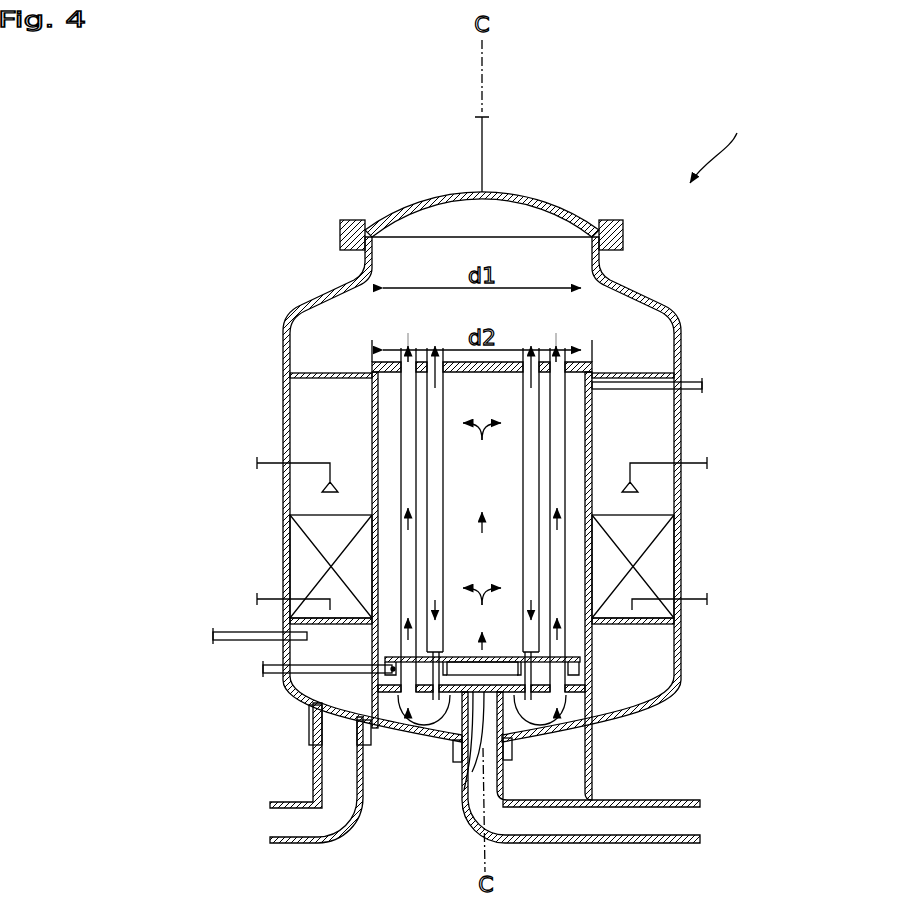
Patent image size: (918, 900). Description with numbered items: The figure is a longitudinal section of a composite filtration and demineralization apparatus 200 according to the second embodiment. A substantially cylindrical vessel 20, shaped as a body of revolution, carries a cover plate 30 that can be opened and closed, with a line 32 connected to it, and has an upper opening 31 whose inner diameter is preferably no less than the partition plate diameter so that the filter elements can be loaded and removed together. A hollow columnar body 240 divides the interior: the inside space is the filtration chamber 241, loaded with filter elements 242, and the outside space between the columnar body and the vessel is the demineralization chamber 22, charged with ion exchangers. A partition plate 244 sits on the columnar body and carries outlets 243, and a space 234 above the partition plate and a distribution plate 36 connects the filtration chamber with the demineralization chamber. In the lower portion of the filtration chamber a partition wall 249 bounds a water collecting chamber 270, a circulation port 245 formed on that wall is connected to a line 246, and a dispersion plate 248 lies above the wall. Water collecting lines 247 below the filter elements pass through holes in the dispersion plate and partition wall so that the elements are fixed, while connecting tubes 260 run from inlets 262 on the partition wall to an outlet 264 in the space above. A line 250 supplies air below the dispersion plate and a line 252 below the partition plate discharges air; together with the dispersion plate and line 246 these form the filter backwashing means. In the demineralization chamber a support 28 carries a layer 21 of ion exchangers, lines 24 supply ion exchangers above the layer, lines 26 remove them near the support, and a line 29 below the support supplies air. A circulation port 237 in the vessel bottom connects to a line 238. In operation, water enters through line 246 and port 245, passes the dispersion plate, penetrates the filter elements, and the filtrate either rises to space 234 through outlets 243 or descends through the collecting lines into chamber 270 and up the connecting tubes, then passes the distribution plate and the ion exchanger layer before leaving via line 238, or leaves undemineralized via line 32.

The composite filtration and demineralization apparatus 200 is at (722, 129).
The vessel 20 is at (283, 358).
The layer of ion exchangers 21 is at (330, 537).
The demineralization chamber 22 is at (286, 450).
The lines for supplying ion exchangers 24 is at (258, 466).
The lines for removing ion exchangers 26 is at (272, 597).
The support 28 is at (327, 625).
The air supply line 29 is at (233, 641).
The cover plate 30 is at (543, 206).
The upper opening 31 is at (468, 237).
The line 32 is at (484, 131).
The distribution plate 36 is at (335, 372).
The space 234 is at (463, 320).
The circulation port 237 is at (345, 714).
The line 238 is at (300, 802).
The columnar body 240 is at (372, 418).
The filtration chamber 241 is at (502, 569).
The filter elements 242 is at (520, 462).
The outlets 243 is at (431, 355).
The partition plate 244 is at (483, 373).
The circulation port 245 is at (463, 792).
The line 246 is at (612, 800).
The water collecting lines 247 is at (437, 702).
The dispersion plate 248 is at (497, 655).
The partition wall 249 is at (586, 688).
The air supply line 250 is at (275, 674).
The air discharge line 252 is at (690, 390).
The connecting tubes 260 is at (404, 440).
The inlets 262 is at (407, 700).
The outlet 264 is at (402, 350).
The water collecting chamber 270 is at (585, 712).